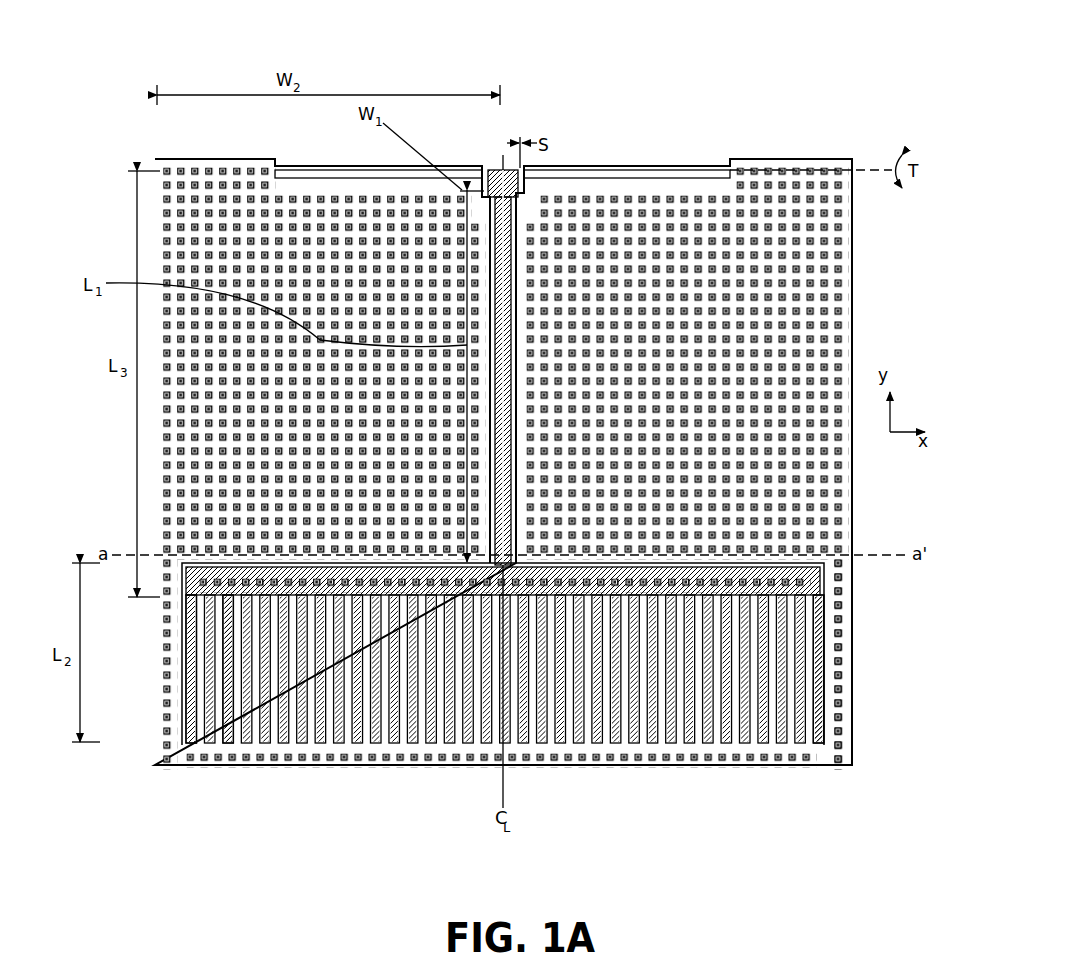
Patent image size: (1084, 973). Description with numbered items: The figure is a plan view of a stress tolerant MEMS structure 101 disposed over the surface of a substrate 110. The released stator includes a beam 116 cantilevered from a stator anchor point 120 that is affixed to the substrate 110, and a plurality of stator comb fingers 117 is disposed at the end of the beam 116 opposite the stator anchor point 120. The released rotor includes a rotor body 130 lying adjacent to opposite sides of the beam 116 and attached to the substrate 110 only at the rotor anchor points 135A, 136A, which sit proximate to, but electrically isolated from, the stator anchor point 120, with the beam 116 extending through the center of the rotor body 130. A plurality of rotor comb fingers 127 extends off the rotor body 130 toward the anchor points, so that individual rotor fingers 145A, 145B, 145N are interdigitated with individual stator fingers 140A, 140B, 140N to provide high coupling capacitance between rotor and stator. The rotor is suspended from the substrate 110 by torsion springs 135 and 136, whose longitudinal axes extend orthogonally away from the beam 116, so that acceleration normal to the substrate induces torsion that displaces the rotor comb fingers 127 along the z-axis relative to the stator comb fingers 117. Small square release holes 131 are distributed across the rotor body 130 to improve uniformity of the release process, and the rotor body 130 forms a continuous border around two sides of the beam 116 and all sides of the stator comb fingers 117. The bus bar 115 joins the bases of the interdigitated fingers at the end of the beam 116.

The stress tolerant MEMS structure 101 is at (104, 173).
The substrate 110 is at (917, 304).
The bus bar 115 is at (827, 570).
The beam 116 is at (526, 386).
The stator comb fingers 117 is at (150, 742).
The stator anchor point 120 is at (492, 168).
The rotor comb fingers 127 is at (850, 585).
The rotor body 130 is at (853, 186).
The release holes 131 is at (807, 165).
The torsion spring 135 is at (405, 170).
The rotor anchor point 135A is at (467, 186).
The torsion spring 136 is at (660, 170).
The rotor anchor point 136A is at (526, 166).
The stator comb finger 140A is at (190, 745).
The stator comb finger 140B is at (229, 745).
The last finger electrode 140N is at (820, 746).
The rotor comb finger 145A is at (198, 743).
The rotor comb finger 145B is at (246, 742).
The rotor comb finger 145N is at (806, 742).